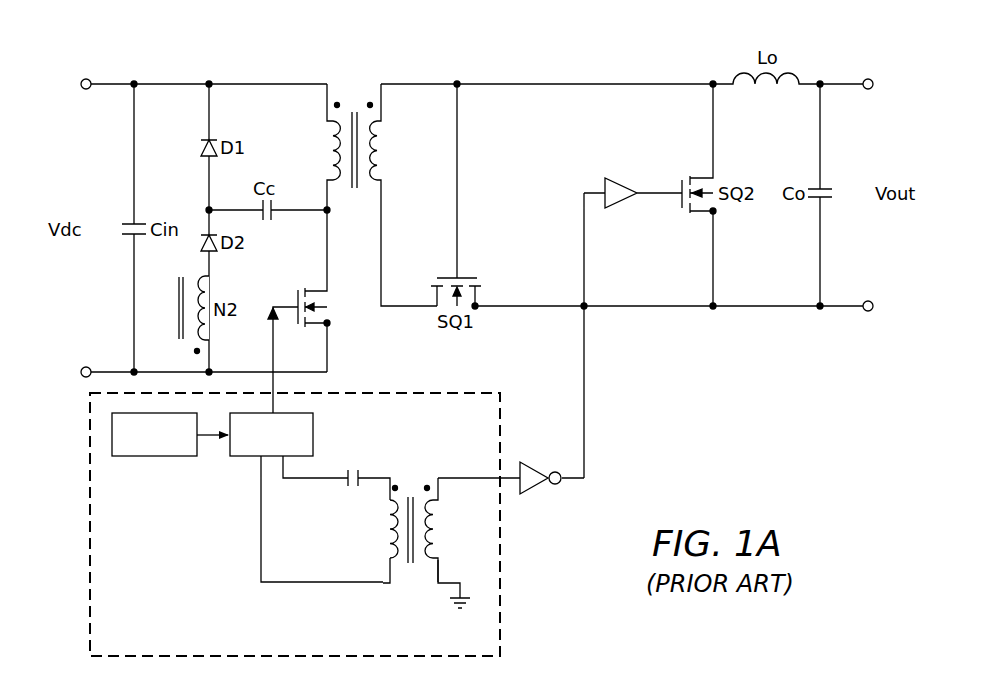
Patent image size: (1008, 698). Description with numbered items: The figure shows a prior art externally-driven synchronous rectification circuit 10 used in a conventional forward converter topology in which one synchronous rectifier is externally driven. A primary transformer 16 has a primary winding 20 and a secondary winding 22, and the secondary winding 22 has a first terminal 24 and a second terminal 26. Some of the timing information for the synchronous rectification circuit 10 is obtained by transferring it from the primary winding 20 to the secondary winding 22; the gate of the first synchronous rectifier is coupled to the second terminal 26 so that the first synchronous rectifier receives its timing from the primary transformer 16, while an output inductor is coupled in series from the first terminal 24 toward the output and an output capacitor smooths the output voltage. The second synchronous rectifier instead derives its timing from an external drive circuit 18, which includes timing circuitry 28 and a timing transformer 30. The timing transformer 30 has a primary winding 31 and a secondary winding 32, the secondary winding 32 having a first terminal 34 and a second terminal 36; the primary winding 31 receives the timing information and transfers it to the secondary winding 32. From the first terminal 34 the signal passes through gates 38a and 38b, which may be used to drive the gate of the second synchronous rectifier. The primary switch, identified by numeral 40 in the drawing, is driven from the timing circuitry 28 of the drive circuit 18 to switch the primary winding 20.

The externally-driven synchronous rectification circuit 10 is at (757, 405).
The primary transformer 16 is at (360, 159).
The external drive circuit 18 is at (172, 625).
The primary winding 20 is at (334, 125).
The secondary winding 22 is at (375, 125).
The first terminal 24 is at (369, 98).
The second terminal 26 is at (370, 192).
The timing circuitry 28 is at (245, 456).
The timing transformer 30 is at (404, 574).
The primary winding 31 is at (392, 521).
The secondary winding 32 is at (431, 522).
The first terminal 34 is at (428, 482).
The second terminal 36 is at (427, 589).
The gate 38a is at (531, 488).
The gate 38b is at (622, 182).
The primary switch Q1 40 is at (298, 300).